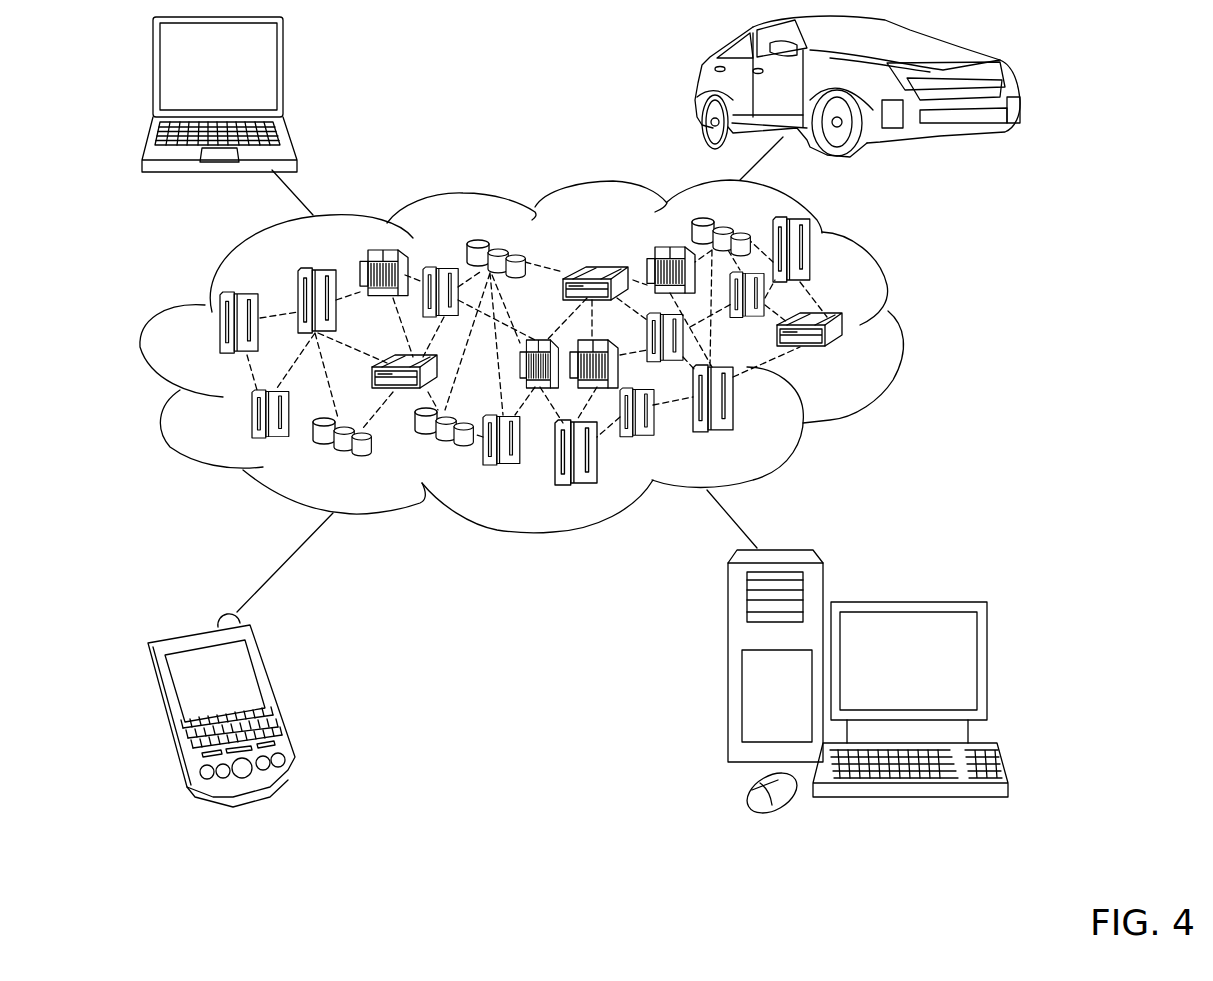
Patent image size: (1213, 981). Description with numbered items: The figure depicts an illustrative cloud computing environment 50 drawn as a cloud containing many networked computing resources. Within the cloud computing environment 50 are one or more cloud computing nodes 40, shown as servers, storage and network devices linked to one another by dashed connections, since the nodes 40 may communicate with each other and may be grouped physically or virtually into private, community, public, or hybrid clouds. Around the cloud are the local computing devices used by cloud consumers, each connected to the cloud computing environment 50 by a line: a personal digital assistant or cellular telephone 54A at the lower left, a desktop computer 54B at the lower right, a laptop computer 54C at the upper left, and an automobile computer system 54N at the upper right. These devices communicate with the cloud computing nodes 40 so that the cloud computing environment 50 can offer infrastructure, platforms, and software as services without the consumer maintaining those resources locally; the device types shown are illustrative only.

The cloud computing environment 50 is at (555, 356).
The cloud computing nodes 40 is at (860, 363).
The personal digital assistant or cellular telephone 54A is at (278, 692).
The desktop computer 54B is at (907, 602).
The laptop computer 54C is at (283, 73).
The automobile computer system 54N is at (697, 88).